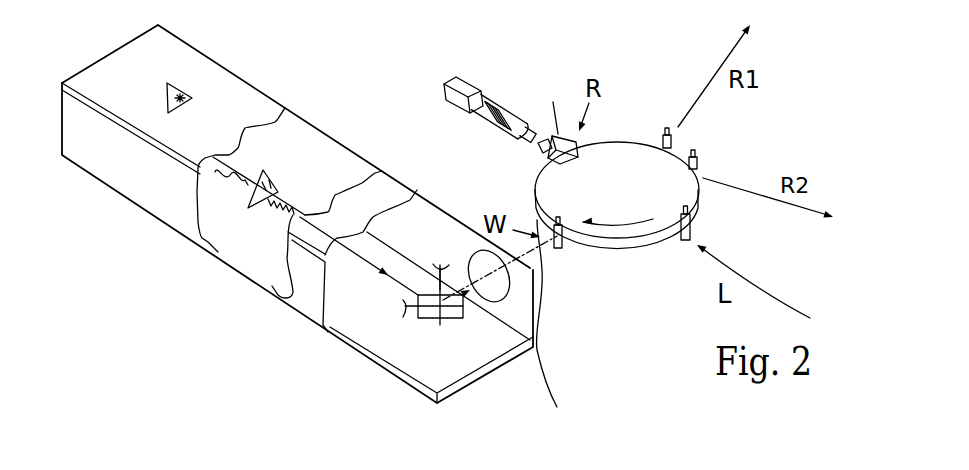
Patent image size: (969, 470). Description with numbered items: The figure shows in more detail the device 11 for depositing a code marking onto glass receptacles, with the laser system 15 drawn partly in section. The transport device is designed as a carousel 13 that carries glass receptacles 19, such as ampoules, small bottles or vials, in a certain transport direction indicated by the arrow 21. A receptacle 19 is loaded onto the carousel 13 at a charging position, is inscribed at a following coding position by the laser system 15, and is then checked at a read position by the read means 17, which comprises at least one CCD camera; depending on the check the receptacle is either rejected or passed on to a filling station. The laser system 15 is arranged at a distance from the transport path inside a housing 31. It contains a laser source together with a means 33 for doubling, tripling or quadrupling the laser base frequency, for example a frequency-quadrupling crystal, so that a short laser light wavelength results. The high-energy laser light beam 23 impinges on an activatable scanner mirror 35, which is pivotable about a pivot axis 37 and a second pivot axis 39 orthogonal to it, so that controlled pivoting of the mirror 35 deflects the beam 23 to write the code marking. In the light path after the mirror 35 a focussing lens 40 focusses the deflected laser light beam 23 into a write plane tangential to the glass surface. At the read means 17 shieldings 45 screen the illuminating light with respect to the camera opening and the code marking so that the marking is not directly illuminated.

The device for depositing a code marking 11 is at (385, 99).
The carousel 13 is at (625, 255).
The laser system 15 is at (160, 222).
The read means 17 is at (457, 105).
The glass receptacle 19 is at (698, 160).
The transport direction arrow 21 is at (617, 223).
The laser light beam 23 is at (372, 247).
The housing 31 is at (227, 72).
The frequency multiplying means 33 is at (237, 210).
The scanner mirror 35 is at (418, 318).
The pivot axis 37 is at (437, 267).
The pivot axis 39 is at (485, 302).
The focussing lens 40 is at (562, 322).
The shielding 45 is at (575, 146).